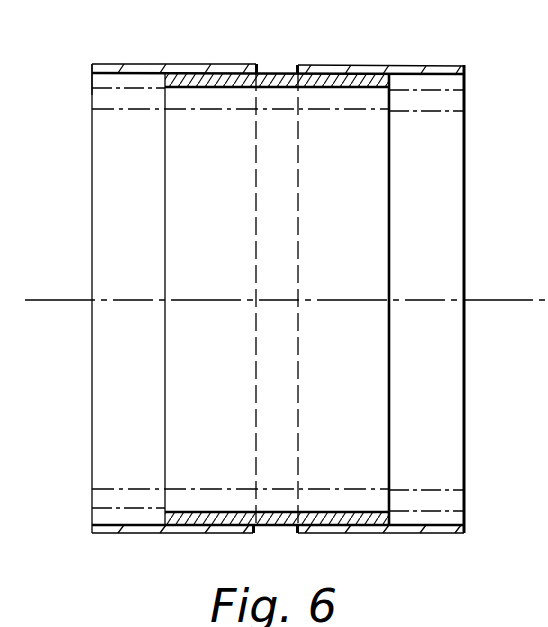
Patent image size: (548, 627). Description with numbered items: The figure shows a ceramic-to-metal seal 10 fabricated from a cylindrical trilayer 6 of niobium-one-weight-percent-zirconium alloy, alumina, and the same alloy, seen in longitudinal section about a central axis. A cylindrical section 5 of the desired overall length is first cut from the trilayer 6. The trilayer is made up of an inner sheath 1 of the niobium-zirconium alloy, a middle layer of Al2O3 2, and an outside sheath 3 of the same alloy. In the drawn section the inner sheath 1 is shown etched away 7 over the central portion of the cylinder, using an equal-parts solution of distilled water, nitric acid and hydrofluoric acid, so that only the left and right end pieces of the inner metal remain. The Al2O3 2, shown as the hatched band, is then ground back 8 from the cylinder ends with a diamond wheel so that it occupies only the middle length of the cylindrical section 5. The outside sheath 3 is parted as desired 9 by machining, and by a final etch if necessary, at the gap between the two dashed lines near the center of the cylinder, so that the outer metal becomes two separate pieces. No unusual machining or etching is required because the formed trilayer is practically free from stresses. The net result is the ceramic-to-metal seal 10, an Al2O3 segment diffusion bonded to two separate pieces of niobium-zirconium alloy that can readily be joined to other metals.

The inner sheath 1 is at (140, 107).
The Al2O3 2 is at (346, 77).
The outside sheath 3 is at (132, 65).
The cylindrical section 5 is at (91, 421).
The trilayer 6 is at (93, 92).
The etched-away region 7 is at (227, 96).
The ground-back region 8 is at (427, 87).
The parting of the outside sheath 9 is at (298, 66).
The ceramic-to-metal seal 10 is at (298, 534).